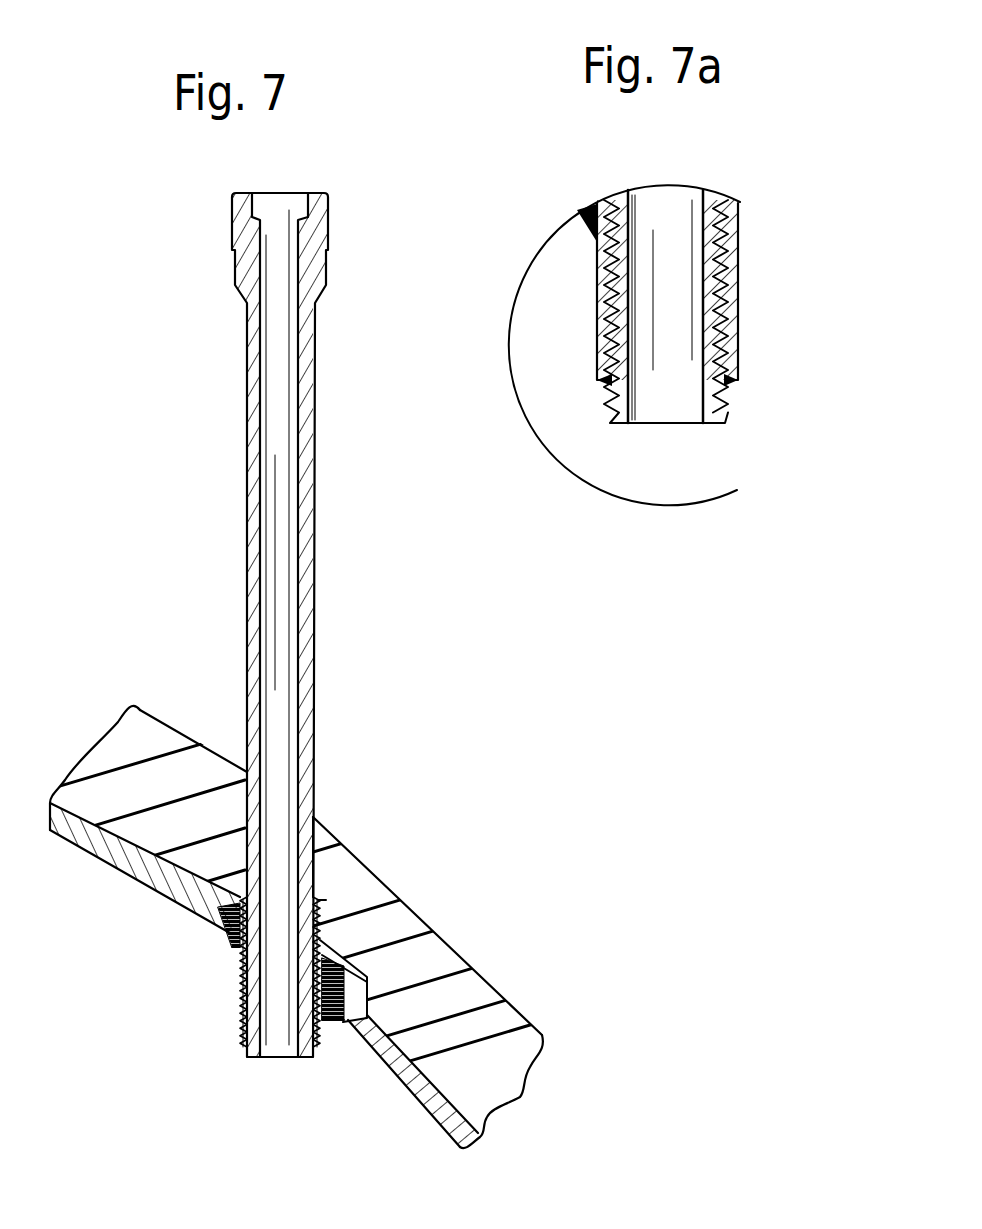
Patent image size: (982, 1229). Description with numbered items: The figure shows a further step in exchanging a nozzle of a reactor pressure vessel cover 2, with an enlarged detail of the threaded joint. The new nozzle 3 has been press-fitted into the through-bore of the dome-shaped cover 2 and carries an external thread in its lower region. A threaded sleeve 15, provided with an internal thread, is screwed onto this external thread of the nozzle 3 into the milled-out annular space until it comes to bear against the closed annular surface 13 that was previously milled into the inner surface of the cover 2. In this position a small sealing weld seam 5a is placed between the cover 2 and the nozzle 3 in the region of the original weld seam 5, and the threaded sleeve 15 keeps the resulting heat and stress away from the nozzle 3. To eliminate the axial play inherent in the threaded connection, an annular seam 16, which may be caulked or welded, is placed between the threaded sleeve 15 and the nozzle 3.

In FIG. 7, the reactor pressure vessel cover 2 is at (130, 733).
In FIG. 7, the nozzle 3 is at (247, 500).
In FIG. 7, the weld seam 5 is at (337, 945).
In FIG. 7, the sealing weld seam 5a is at (237, 947).
In FIG. 7A, the sealing weld seam 5a is at (588, 210).
In FIG. 7, the closed annular surface 13 is at (318, 900).
In FIG. 7, the threaded sleeve 15 is at (320, 900).
In FIG. 7, the annular seam 16 is at (247, 1033).
In FIG. 7A, the annular seam 16 is at (603, 383).